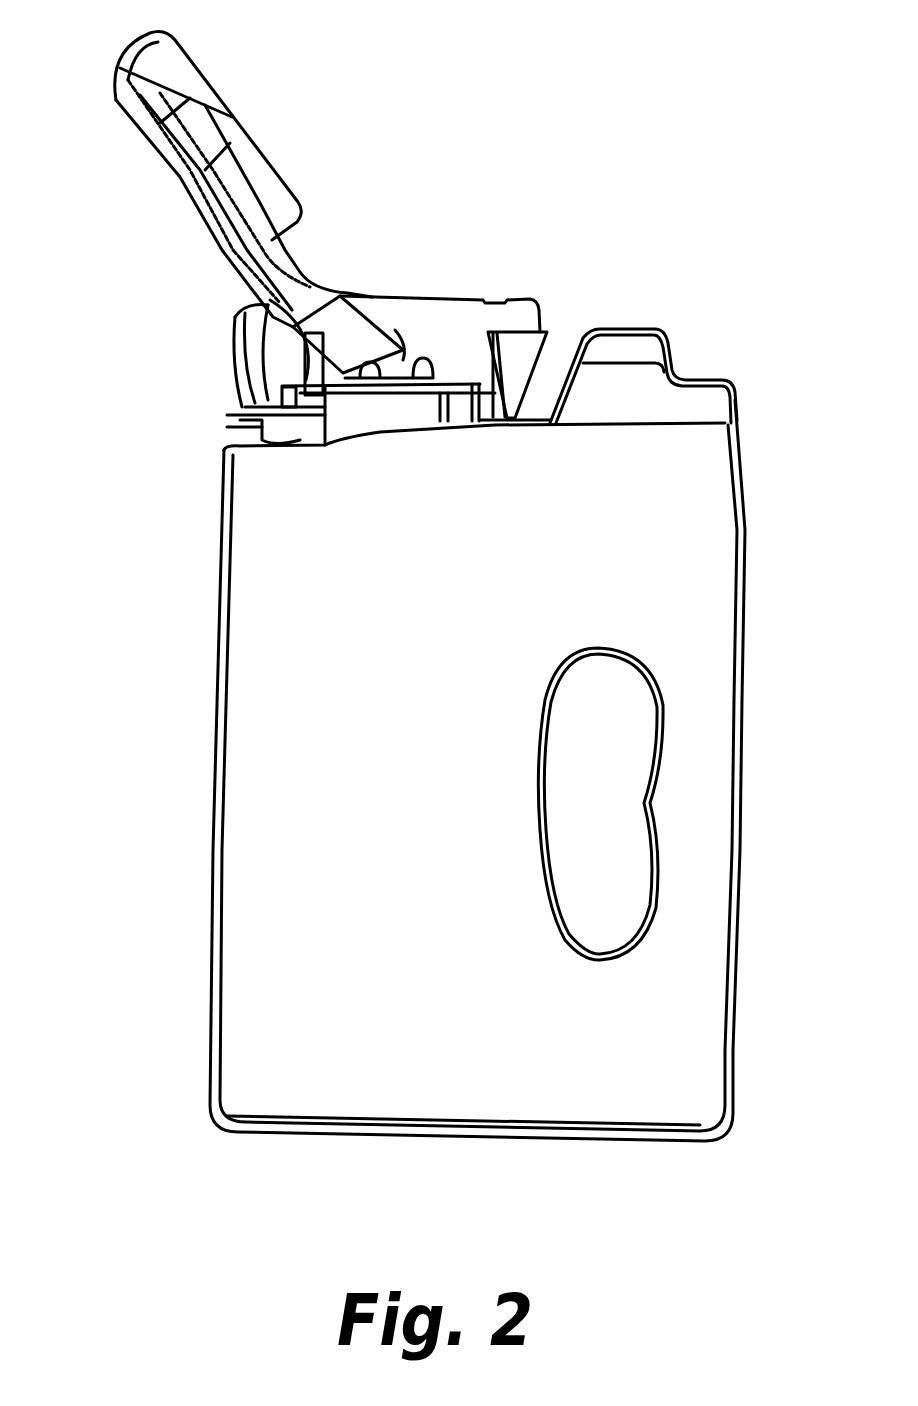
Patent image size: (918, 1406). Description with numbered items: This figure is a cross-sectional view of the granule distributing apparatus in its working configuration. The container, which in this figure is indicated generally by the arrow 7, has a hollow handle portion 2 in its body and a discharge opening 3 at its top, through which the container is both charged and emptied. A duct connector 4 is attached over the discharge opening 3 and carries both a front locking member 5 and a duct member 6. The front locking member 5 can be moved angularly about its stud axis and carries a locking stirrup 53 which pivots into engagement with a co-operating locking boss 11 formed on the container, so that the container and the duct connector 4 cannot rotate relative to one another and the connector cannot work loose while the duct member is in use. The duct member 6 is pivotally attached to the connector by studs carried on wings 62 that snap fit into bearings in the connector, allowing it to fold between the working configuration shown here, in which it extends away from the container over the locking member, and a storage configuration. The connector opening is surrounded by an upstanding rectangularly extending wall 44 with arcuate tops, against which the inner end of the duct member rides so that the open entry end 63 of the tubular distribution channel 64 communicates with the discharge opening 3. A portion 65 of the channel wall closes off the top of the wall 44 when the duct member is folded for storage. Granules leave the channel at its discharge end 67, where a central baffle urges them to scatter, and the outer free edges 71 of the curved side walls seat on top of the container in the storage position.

The hollow handle portion 2 is at (633, 812).
The discharge opening 3 is at (320, 437).
The duct connector 4 is at (517, 300).
The front locking member 5 is at (236, 330).
The duct member 6 is at (177, 180).
The container 7 is at (207, 823).
The locking boss 11 is at (247, 417).
The upstanding rectangularly extending wall 44 is at (442, 393).
The locking stirrup 53 is at (247, 433).
The wings 62 is at (400, 303).
The open entry end 63 is at (378, 395).
The tubular distribution channel 64 is at (280, 187).
The portion of the wall of the channel 65 is at (387, 303).
The discharge end 67 is at (187, 60).
The outer free edges 71 is at (223, 107).